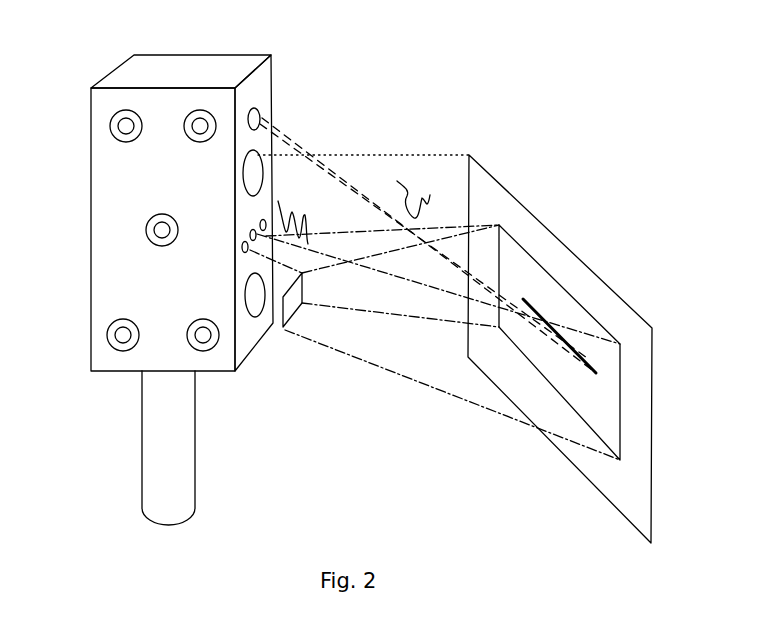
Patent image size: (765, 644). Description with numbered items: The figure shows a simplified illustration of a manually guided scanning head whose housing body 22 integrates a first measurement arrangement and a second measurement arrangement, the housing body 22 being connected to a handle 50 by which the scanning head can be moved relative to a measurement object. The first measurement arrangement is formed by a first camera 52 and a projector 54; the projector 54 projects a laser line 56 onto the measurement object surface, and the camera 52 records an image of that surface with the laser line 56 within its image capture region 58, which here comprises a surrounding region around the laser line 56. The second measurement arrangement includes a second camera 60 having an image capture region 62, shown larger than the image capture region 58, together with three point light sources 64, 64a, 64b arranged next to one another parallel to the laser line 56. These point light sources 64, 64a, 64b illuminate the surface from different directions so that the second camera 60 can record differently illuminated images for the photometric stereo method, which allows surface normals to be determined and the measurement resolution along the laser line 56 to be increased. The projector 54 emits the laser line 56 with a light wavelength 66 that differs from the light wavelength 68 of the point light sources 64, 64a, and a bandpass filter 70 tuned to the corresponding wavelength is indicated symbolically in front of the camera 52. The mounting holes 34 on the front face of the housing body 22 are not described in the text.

The housing body 22 is at (186, 60).
The mounting holes 34 is at (117, 140).
The handle 50 is at (152, 467).
The first camera 52 is at (247, 318).
The projector 54 is at (258, 113).
The laser line 56 is at (548, 322).
The image capture region 58 is at (620, 407).
The second camera 60 is at (245, 177).
The image capture region 62 is at (530, 205).
The point light source 64 is at (252, 233).
The point light source 64a is at (243, 254).
The point light source 64b is at (264, 218).
The light wavelength 66 is at (412, 183).
The light wavelength 68 is at (305, 218).
The bandpass filter 70 is at (290, 322).